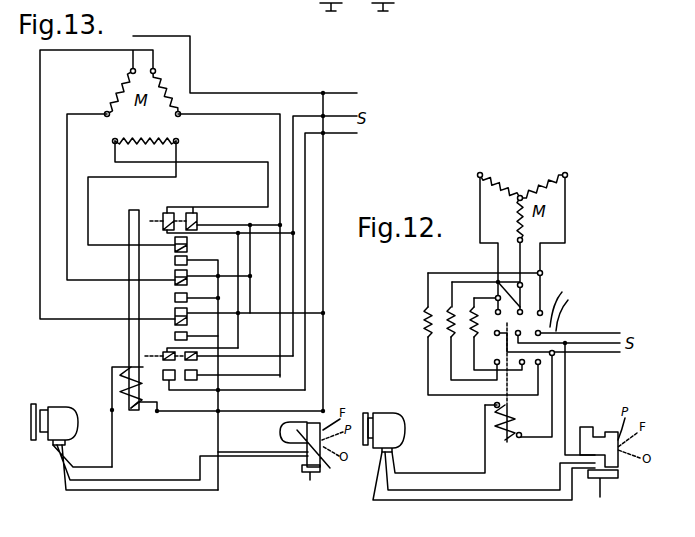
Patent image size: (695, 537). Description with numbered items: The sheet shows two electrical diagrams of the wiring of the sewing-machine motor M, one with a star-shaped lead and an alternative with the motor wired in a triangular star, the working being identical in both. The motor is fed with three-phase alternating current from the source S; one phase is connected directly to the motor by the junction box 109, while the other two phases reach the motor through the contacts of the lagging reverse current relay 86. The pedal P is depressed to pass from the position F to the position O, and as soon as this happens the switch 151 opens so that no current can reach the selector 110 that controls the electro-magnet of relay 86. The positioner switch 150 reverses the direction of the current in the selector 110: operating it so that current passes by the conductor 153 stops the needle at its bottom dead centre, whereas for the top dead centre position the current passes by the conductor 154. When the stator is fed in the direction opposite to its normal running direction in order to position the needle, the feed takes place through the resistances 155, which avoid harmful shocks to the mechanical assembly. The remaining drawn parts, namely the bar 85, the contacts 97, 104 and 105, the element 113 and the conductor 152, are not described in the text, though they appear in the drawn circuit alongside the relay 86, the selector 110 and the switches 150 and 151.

In FIG. 13, the cam bar 85 is at (129, 302).
In FIG. 13, the lagging reverse current relay 86 is at (140, 413).
In FIG. 12, the lagging reverse current relay 86 is at (502, 441).
In FIG. 12, the switch contact 97 is at (473, 311).
In FIG. 12, the switch contact 104 is at (496, 297).
In FIG. 12, the switch contact 105 is at (497, 281).
In FIG. 12, the junction box 109 is at (564, 302).
In FIG. 13, the selector 110 is at (62, 418).
In FIG. 12, the selector 110 is at (393, 414).
In FIG. 13, the switch flange 113 is at (36, 404).
In FIG. 12, the switch flange 113 is at (366, 412).
In FIG. 13, the positioner switch 150 is at (317, 453).
In FIG. 12, the positioner switch 150 is at (605, 431).
In FIG. 13, the switch 151 is at (310, 481).
In FIG. 12, the switch 151 is at (600, 490).
In FIG. 12, the conductor 152 is at (460, 475).
In FIG. 12, the conductor 153 is at (503, 499).
In FIG. 12, the conductor 154 is at (422, 489).
In FIG. 12, the resistances 155 is at (450, 328).